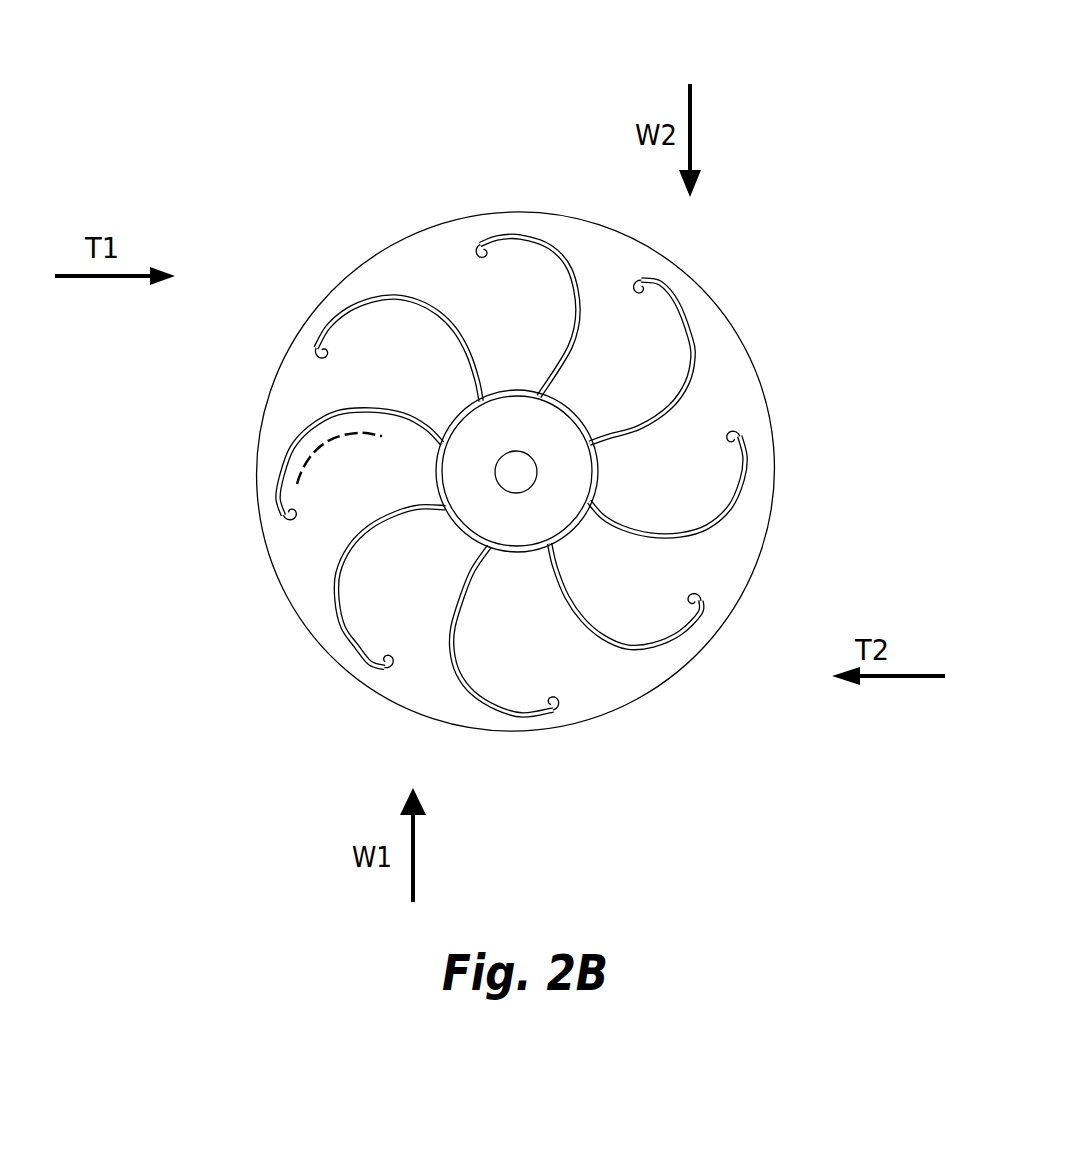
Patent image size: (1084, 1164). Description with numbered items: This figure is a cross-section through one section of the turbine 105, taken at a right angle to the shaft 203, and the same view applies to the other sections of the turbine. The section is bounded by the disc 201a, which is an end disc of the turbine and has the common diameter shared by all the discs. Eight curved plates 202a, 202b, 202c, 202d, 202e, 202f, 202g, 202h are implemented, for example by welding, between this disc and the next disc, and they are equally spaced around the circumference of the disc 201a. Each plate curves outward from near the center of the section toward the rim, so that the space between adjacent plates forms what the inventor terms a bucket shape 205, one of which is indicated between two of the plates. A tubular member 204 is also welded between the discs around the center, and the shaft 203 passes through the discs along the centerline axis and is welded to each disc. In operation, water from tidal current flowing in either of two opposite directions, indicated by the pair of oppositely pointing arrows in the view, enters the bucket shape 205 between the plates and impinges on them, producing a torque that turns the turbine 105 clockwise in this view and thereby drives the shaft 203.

The turbine 105 is at (509, 427).
The disc 201a is at (398, 243).
The curved plate 202a is at (509, 236).
The curved plate 202b is at (357, 302).
The curved plate 202c is at (312, 421).
The curved plate 202d is at (336, 576).
The curved plate 202e is at (466, 689).
The curved plate 202f is at (627, 650).
The curved plate 202g is at (739, 494).
The curved plate 202h is at (694, 356).
The shaft 203 is at (511, 452).
The tubular member 204 is at (453, 530).
The bucket shape 205 is at (283, 462).